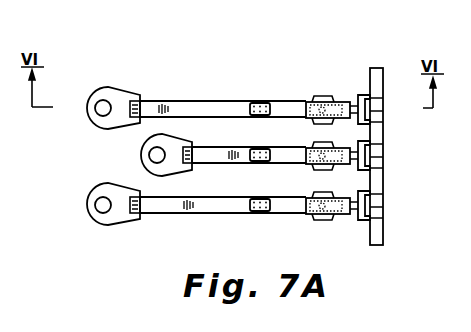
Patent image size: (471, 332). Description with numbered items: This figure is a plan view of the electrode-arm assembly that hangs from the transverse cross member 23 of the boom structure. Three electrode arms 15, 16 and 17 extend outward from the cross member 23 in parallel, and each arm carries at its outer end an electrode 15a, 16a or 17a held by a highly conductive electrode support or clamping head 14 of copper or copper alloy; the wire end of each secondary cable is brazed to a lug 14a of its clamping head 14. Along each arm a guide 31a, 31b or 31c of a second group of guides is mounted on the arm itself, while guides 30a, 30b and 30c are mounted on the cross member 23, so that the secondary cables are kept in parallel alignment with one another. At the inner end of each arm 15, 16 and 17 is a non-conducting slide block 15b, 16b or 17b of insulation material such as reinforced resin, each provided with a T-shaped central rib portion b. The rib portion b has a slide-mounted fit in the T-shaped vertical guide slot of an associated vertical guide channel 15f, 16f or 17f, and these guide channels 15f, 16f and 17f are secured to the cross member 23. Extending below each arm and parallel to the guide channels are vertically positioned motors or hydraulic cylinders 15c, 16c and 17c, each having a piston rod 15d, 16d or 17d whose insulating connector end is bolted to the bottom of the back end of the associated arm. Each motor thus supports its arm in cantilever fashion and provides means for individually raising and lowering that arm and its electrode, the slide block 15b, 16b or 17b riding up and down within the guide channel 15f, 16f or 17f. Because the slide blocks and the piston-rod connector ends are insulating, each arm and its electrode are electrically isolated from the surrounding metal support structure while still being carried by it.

The electrode support or clamping head 14 is at (133, 90).
The lug 14a is at (128, 226).
The electrode arm 15 is at (239, 197).
The electrode 15a is at (82, 203).
The non-conducting slide block 15b is at (343, 223).
The hydraulic cylinder 15c is at (328, 225).
The piston rod 15d is at (302, 214).
The vertical guide channel 15f is at (384, 191).
The electrode arm 16 is at (224, 148).
The electrode 16a is at (137, 146).
The non-conducting slide block 16b is at (309, 171).
The hydraulic cylinder 16c is at (316, 171).
The piston rod 16d is at (302, 148).
The vertical guide channel 16f is at (384, 136).
The electrode arm 17 is at (222, 101).
The electrode 17a is at (107, 99).
The non-conducting slide block 17b is at (326, 125).
The hydraulic cylinder 17c is at (318, 95).
The piston rod 17d is at (303, 103).
The vertical guide channel 17f is at (358, 93).
The transverse cross member 23 is at (384, 238).
The cable guide 30a is at (384, 222).
The cable guide 30b is at (384, 167).
The cable guide 30c is at (378, 101).
The cable guide 31a is at (252, 216).
The cable guide 31b is at (259, 164).
The cable guide 31c is at (257, 102).
The T-shaped central rib portion b is at (372, 97).